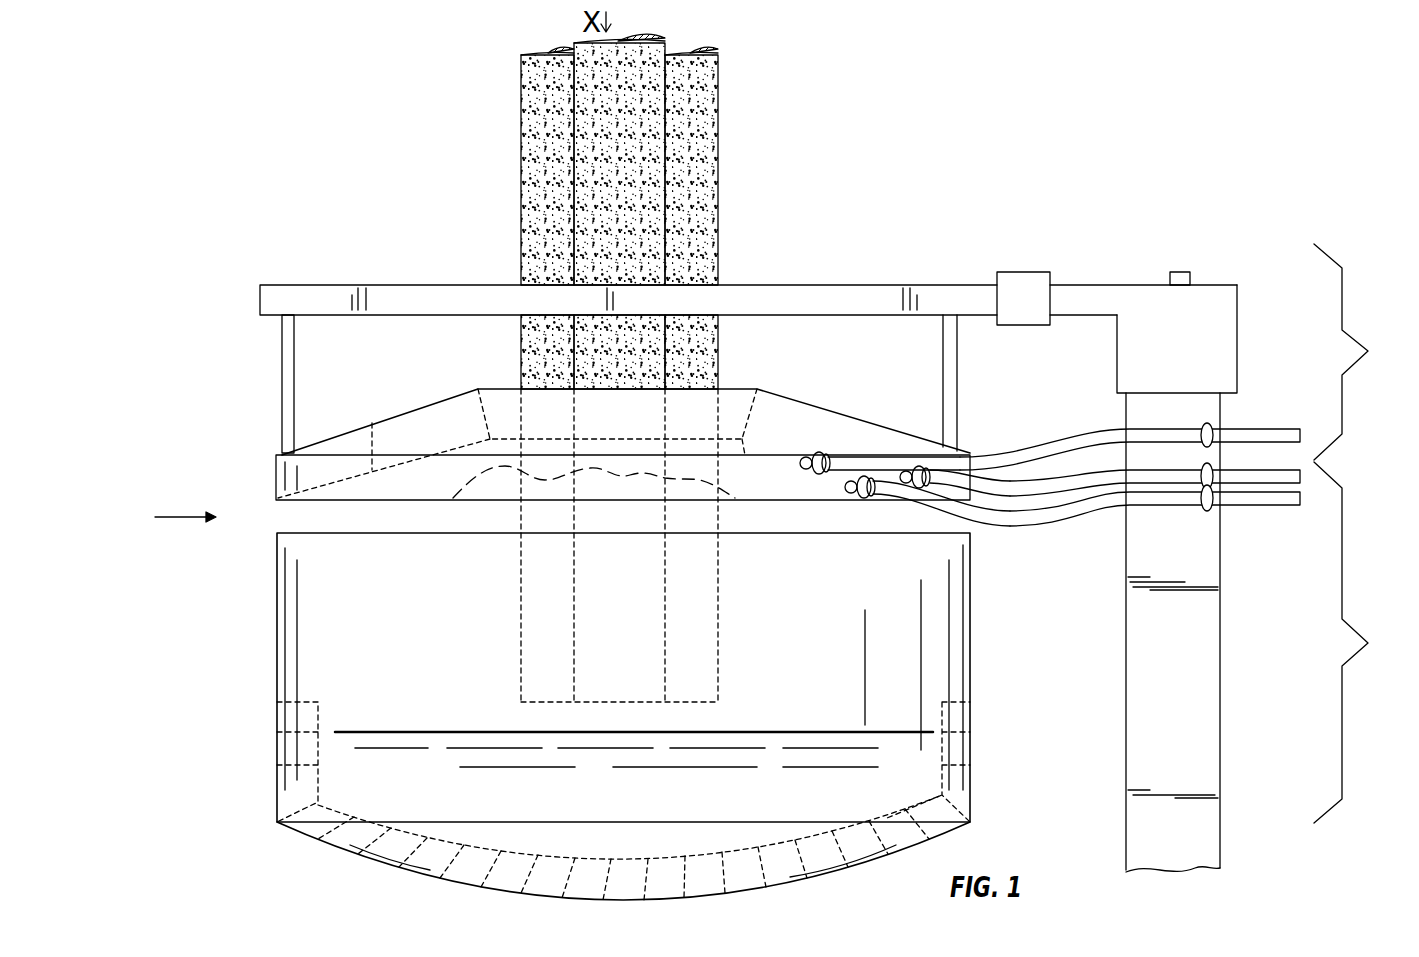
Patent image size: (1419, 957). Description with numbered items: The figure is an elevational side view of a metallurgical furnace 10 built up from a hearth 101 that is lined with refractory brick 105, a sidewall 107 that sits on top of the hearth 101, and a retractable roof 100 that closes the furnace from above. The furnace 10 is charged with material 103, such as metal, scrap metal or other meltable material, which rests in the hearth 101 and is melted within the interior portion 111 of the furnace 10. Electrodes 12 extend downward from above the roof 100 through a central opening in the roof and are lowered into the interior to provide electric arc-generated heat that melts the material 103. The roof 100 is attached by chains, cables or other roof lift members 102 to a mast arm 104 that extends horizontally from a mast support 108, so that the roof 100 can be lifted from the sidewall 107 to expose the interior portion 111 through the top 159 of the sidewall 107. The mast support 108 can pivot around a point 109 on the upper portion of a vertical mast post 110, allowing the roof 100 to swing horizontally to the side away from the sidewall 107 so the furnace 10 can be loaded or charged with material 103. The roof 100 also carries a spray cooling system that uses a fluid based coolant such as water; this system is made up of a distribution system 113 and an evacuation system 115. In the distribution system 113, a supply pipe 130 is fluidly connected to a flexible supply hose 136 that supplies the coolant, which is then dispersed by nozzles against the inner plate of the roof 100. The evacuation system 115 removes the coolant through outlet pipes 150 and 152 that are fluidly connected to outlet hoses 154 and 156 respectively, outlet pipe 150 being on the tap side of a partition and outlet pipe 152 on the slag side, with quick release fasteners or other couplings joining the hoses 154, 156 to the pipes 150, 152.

The metallurgical furnace 10 is at (192, 617).
The electrodes 12 is at (511, 76).
The roof 100 is at (357, 429).
The hearth 101 is at (968, 716).
The roof lift members 102 is at (283, 381).
The material 103 is at (607, 801).
The mast arm 104 is at (815, 297).
The refractory brick 105 is at (503, 880).
The sidewall 107 is at (277, 671).
The mast support 108 is at (1103, 286).
The point 109 is at (1182, 270).
The vertical mast post 110 is at (1215, 766).
The interior portion 111 is at (930, 672).
The distribution system 113 is at (1359, 352).
The evacuation system 115 is at (1360, 642).
The supply pipe 130 is at (818, 456).
The flexible supply hose 136 is at (1055, 446).
The outlet pipe 150 is at (845, 495).
The outlet pipe 152 is at (920, 462).
The outlet hose 154 is at (1012, 522).
The outlet hose 156 is at (1060, 493).
The top 159 is at (290, 516).